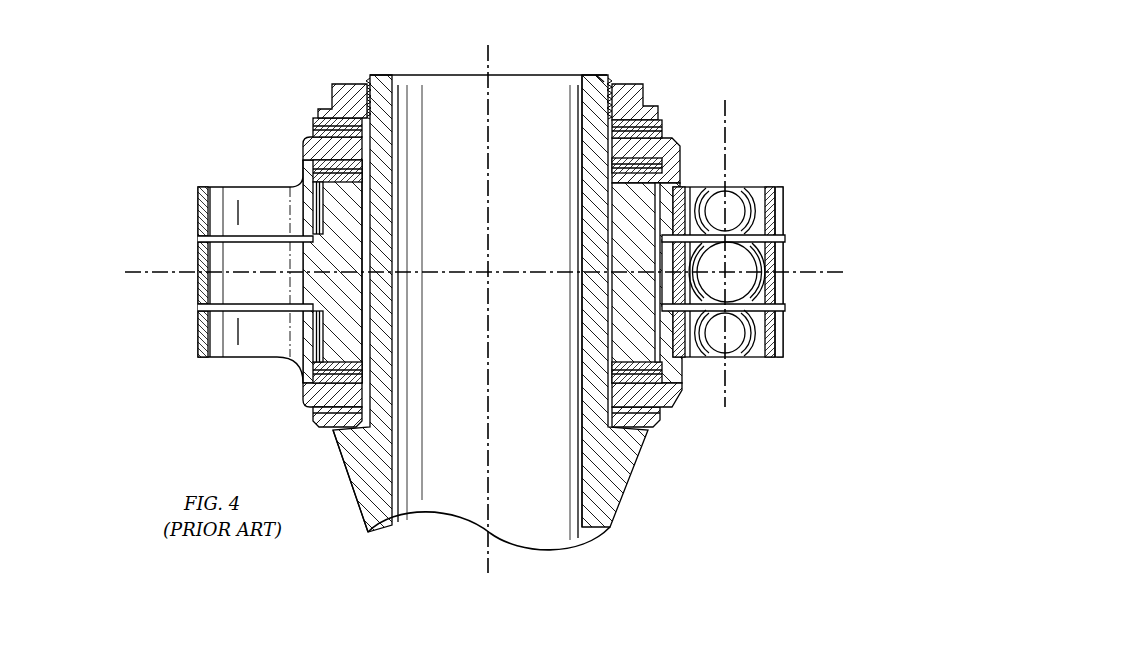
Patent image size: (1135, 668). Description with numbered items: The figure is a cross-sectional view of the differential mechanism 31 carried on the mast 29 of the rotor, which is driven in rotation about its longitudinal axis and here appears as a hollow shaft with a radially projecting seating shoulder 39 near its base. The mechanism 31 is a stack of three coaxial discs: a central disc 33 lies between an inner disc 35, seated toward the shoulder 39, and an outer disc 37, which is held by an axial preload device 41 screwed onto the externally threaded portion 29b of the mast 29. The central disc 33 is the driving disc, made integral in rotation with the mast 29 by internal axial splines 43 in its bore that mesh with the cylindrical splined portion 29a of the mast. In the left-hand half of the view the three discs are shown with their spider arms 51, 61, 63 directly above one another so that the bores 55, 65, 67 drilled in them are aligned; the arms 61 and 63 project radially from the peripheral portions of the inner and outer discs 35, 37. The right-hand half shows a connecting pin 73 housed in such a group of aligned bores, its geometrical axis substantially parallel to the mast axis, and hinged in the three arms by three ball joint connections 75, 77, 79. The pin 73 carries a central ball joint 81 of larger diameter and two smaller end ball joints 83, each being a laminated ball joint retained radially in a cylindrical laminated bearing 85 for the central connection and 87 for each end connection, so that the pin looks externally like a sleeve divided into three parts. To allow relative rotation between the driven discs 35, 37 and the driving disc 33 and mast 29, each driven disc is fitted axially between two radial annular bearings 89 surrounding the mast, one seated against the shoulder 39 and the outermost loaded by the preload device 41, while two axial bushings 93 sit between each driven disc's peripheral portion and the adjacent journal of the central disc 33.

The mast 29 is at (630, 488).
The cylindrical splined portion 29a is at (590, 221).
The externally threaded portion 29b is at (596, 75).
The differential mechanism 31 is at (247, 68).
The central disc 33 is at (195, 300).
The inner disc 35 is at (297, 404).
The outer disc 37 is at (300, 143).
The seating shoulder 39 is at (352, 486).
The axial preload device 41 is at (330, 96).
The internal axial splines 43 is at (367, 233).
The spider arms 51 is at (196, 284).
The cylindrical bores 55 is at (215, 268).
The spider arms 61 is at (196, 353).
The spider arms 63 is at (196, 196).
The bores 65 is at (232, 348).
The bores 67 is at (232, 197).
The connecting pin 73 is at (737, 182).
The ball joint connection 75 is at (780, 290).
The ball joint connection 77 is at (772, 357).
The ball joint connection 79 is at (772, 190).
The central ball joint 81 is at (787, 240).
The end ball joints 83 is at (716, 198).
The cylindrical laminated bearing 85 is at (790, 302).
The cylindrical laminated bearing 87 is at (787, 326).
The radial annular bearings 89 is at (660, 118).
The axial bushings 93 is at (318, 195).